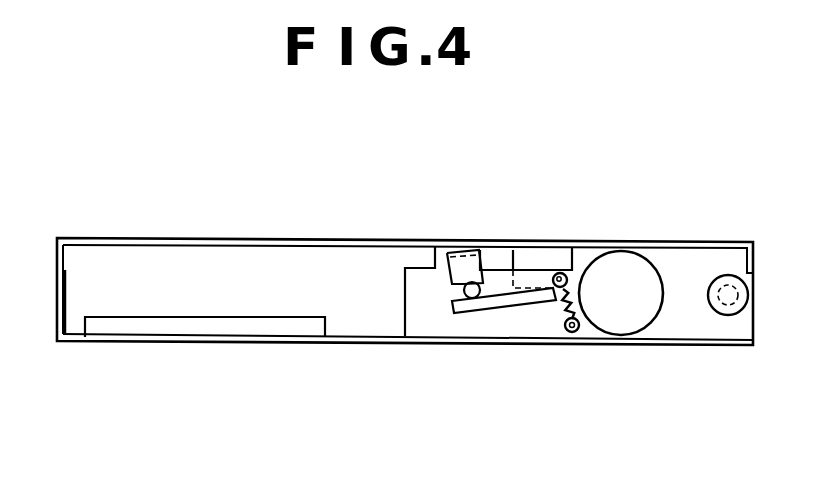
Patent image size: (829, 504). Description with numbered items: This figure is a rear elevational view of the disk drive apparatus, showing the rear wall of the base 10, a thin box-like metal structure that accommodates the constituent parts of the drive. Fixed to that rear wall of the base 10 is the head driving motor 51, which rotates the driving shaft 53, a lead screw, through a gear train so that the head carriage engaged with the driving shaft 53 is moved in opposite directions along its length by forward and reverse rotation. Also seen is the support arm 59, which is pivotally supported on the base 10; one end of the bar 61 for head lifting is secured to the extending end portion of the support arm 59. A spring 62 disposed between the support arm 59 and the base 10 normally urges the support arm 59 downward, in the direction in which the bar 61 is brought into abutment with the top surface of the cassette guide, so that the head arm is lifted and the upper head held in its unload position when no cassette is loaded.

The base 10 is at (72, 288).
The head driving motor 51 is at (618, 305).
The driving shaft 53 is at (722, 300).
The support arm 59 is at (501, 293).
The bar for head lifting 61 is at (557, 273).
The spring 62 is at (555, 304).